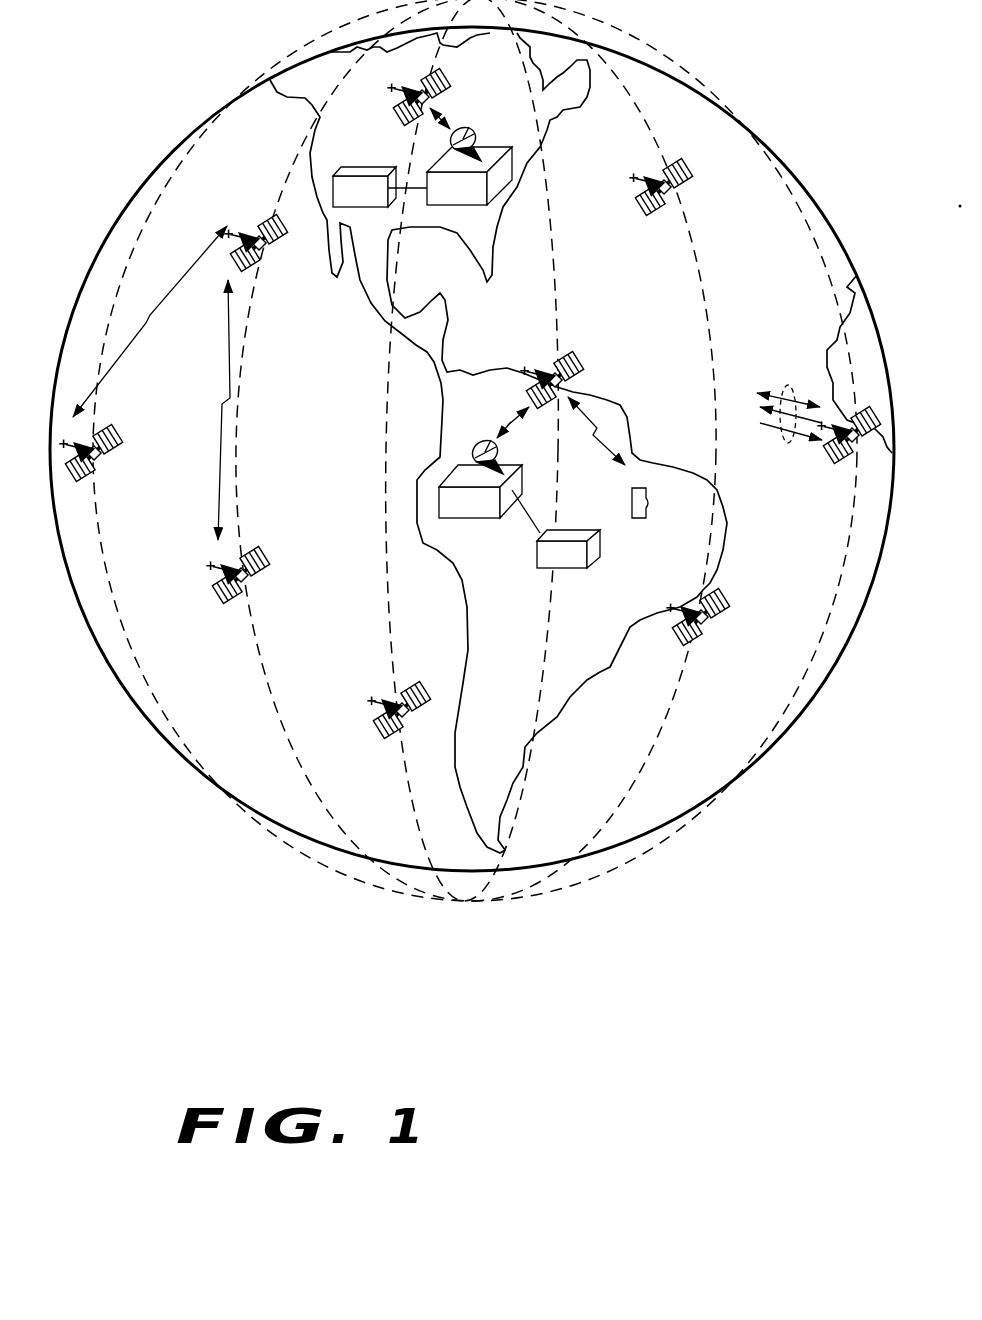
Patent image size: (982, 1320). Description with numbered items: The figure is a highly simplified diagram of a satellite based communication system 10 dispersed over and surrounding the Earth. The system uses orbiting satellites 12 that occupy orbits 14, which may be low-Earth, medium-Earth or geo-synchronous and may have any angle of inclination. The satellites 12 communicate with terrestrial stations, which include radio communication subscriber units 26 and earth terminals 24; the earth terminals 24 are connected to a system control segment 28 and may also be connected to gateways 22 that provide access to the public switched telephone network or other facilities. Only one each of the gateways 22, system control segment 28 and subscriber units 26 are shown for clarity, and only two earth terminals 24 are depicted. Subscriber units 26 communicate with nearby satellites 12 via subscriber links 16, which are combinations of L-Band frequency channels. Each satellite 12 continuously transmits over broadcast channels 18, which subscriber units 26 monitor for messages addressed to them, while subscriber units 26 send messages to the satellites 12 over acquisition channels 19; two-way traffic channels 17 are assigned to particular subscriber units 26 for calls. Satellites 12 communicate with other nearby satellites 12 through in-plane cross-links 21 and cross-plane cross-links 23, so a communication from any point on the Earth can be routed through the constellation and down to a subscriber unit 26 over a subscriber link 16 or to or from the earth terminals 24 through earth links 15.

The satellite based communication system 10 is at (470, 998).
The orbiting satellites 12 is at (398, 125).
The orbits 14 is at (286, 160).
The earth links 15 is at (505, 422).
The subscriber links 16 is at (590, 412).
The traffic channels 17 is at (778, 392).
The broadcast channels 18 is at (758, 402).
The acquisition channels 19 is at (770, 420).
The in-plane cross-links 21 is at (222, 474).
The gateways 22 is at (573, 567).
The cross-plane cross-links 23 is at (166, 306).
The earth terminals 24 is at (491, 148).
The radio communication subscriber units 26 is at (639, 519).
The system control segment 28 is at (348, 208).